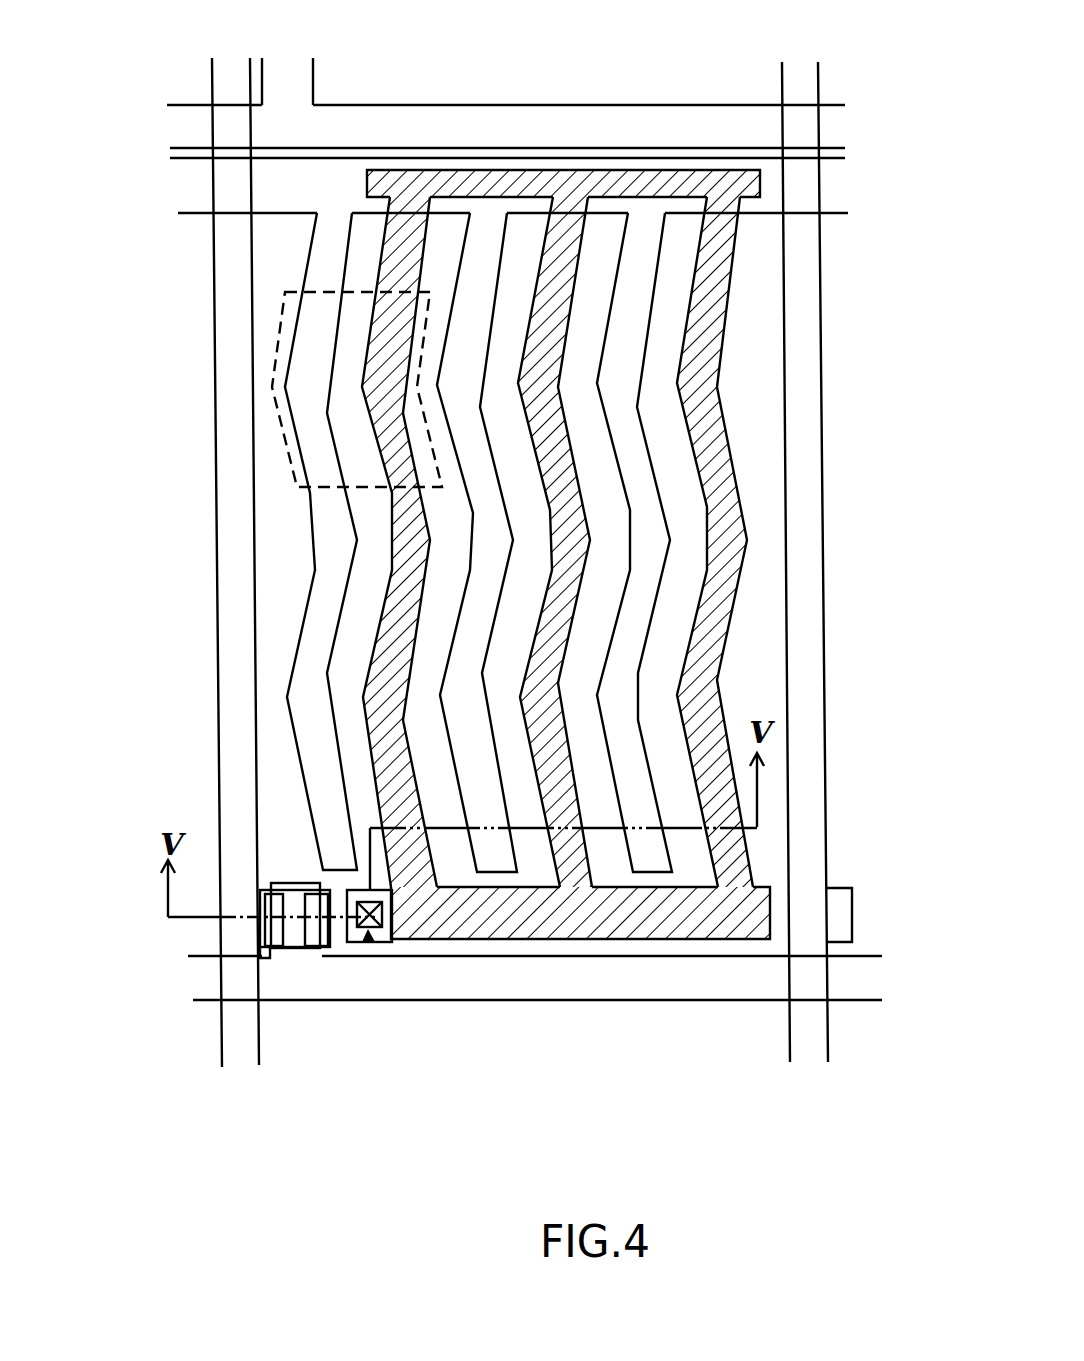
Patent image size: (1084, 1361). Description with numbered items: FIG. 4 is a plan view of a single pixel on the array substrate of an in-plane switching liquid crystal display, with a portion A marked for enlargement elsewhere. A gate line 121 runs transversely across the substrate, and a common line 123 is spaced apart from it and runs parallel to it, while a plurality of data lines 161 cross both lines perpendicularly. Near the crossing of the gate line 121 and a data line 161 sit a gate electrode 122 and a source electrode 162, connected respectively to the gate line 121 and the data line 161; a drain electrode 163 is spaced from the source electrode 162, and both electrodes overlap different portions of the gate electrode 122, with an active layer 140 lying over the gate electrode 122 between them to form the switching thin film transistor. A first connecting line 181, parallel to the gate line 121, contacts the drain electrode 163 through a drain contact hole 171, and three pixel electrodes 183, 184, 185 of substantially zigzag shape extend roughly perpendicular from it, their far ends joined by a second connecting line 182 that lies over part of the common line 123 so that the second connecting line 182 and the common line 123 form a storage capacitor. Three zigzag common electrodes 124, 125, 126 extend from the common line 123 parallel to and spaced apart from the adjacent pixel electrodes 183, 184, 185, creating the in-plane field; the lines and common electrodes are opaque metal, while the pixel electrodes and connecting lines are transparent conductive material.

The gate line 121 is at (521, 117).
The gate electrode 122 is at (297, 880).
The common line 123 is at (335, 172).
The common electrode 124 is at (322, 447).
The common electrode 125 is at (462, 655).
The common electrode 126 is at (620, 660).
The active layer 140 is at (293, 935).
The data line 161 is at (237, 322).
The source electrode 162 is at (282, 950).
The drain electrode 163 is at (393, 933).
The drain contact hole 171 is at (367, 950).
The first connecting line 181 is at (647, 933).
The second connecting line 182 is at (713, 170).
The pixel electrode 183 is at (398, 565).
The pixel electrode 184 is at (568, 488).
The pixel electrode 185 is at (707, 397).
The portion A is at (272, 388).